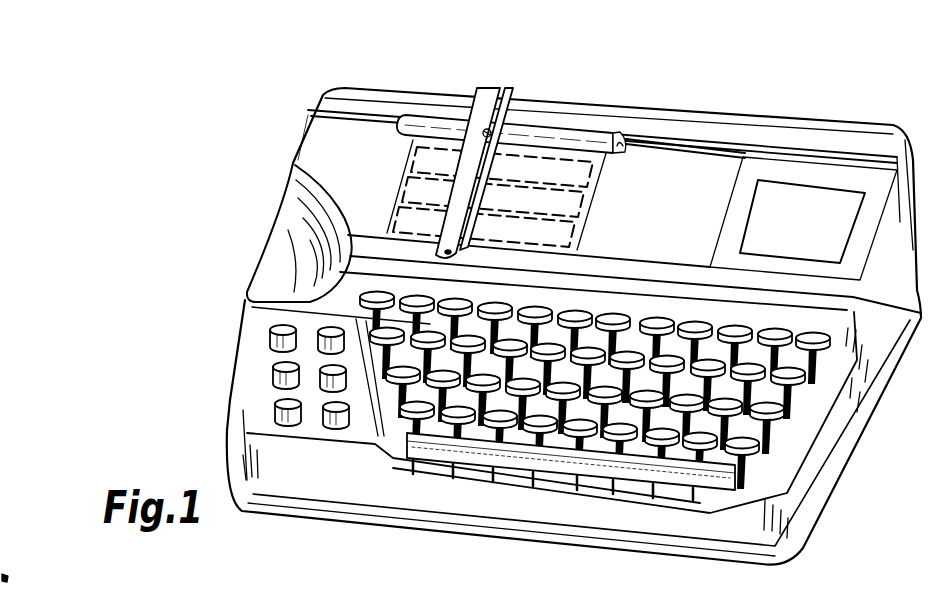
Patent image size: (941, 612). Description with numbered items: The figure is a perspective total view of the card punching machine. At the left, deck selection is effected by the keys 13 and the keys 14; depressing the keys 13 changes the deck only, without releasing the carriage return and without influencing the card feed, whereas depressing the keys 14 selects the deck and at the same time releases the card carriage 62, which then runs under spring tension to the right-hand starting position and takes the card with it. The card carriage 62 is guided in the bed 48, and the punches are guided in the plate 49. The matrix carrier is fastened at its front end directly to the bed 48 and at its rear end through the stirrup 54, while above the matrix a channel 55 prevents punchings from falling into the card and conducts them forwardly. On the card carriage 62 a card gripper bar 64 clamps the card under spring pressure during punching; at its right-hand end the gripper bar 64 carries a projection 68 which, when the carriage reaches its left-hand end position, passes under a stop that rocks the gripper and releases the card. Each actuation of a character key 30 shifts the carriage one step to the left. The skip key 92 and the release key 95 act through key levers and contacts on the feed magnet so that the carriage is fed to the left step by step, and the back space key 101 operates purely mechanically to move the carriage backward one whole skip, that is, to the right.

The keys 13 is at (278, 402).
The keys 14 is at (337, 423).
The character key 30 is at (600, 455).
The bed 48 is at (310, 212).
The plate 49 is at (327, 150).
The stirrup 54 is at (493, 98).
The channel 55 is at (510, 123).
The card carriage 62 is at (707, 143).
The card gripper bar 64 is at (595, 137).
The projection 68 is at (624, 134).
The skip key 92 is at (674, 475).
The release key 95 is at (808, 372).
The back space key 101 is at (828, 340).